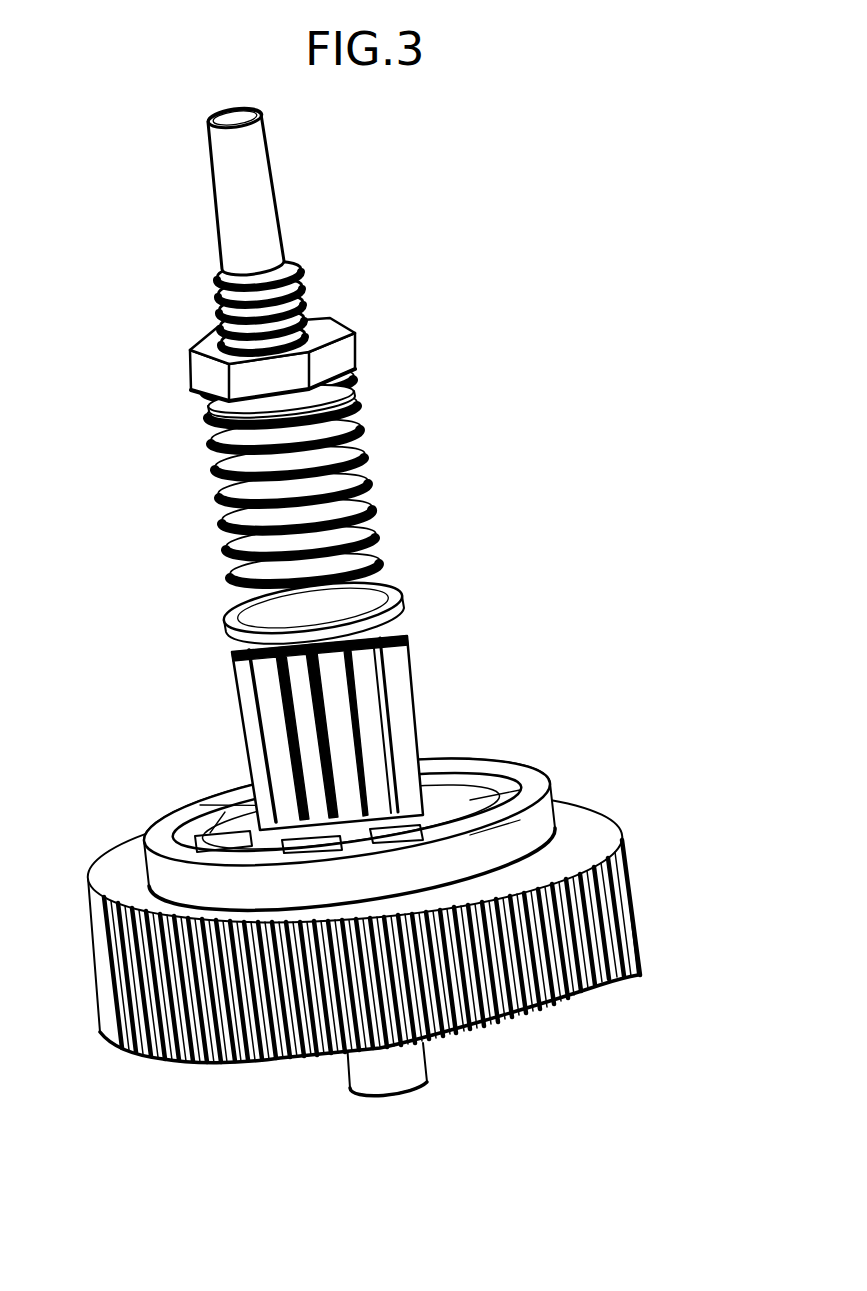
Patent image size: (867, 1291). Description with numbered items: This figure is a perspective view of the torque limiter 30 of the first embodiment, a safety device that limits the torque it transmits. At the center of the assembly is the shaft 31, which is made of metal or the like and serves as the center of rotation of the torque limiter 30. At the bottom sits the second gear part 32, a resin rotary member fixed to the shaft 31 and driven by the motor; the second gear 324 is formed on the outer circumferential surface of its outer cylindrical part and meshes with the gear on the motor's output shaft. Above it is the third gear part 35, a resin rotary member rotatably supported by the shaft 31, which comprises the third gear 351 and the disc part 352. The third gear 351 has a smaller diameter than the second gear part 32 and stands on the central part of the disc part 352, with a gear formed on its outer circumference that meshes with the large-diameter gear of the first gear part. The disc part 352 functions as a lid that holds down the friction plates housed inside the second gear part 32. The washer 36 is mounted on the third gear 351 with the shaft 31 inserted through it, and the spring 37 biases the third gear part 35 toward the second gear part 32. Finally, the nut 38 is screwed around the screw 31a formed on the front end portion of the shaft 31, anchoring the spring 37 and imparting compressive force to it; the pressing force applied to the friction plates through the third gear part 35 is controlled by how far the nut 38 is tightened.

The torque limiter 30 is at (607, 487).
The shaft 31 is at (243, 187).
The screw 31a is at (298, 272).
The second gear part 32 is at (682, 943).
The second gear 324 is at (103, 962).
The third gear part 35 is at (206, 737).
The third gear 351 is at (400, 697).
The disc part 352 is at (160, 835).
The washer 36 is at (215, 408).
The spring 37 is at (236, 478).
The nut 38 is at (210, 365).